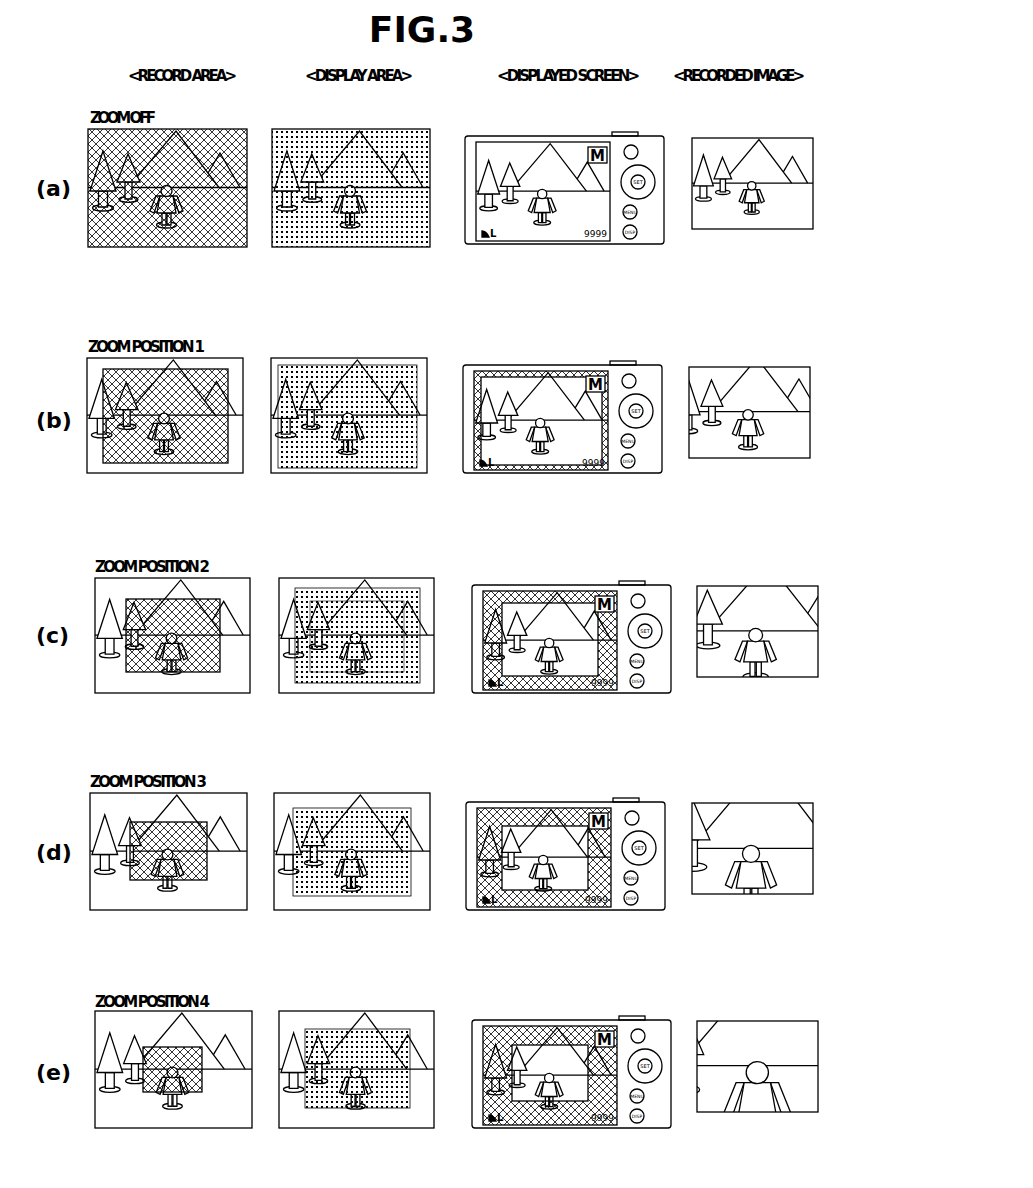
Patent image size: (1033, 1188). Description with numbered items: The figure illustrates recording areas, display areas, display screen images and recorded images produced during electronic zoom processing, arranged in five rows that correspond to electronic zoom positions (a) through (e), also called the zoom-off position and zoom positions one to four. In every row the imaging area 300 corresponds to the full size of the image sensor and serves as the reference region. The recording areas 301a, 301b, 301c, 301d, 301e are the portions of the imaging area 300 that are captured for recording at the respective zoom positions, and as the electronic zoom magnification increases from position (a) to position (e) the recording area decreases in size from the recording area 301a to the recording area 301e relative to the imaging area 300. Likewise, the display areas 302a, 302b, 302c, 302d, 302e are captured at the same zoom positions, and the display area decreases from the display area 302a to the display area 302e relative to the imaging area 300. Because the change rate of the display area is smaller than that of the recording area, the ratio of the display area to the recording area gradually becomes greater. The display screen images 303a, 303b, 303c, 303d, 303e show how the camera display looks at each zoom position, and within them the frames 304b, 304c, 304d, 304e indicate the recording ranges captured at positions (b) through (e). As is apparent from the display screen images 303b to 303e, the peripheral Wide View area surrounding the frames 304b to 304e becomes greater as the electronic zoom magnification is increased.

The imaging area 300 is at (177, 131).
The recording area 301a is at (230, 142).
The recording area 301b is at (224, 370).
The recording area 301c is at (196, 610).
The recording area 301d is at (195, 828).
The recording area 301e is at (203, 1045).
The display area 302a is at (405, 142).
The display area 302b is at (417, 368).
The display area 302c is at (400, 603).
The display area 302d is at (393, 812).
The display area 302e is at (400, 1032).
The display screen image 303a is at (522, 148).
The display screen image 303b is at (562, 400).
The display screen image 303c is at (571, 623).
The display screen image 303d is at (565, 834).
The display screen image 303e is at (571, 1056).
The frame 304b is at (522, 374).
The frame 304c is at (523, 598).
The frame 304d is at (537, 827).
The frame 304e is at (540, 1048).